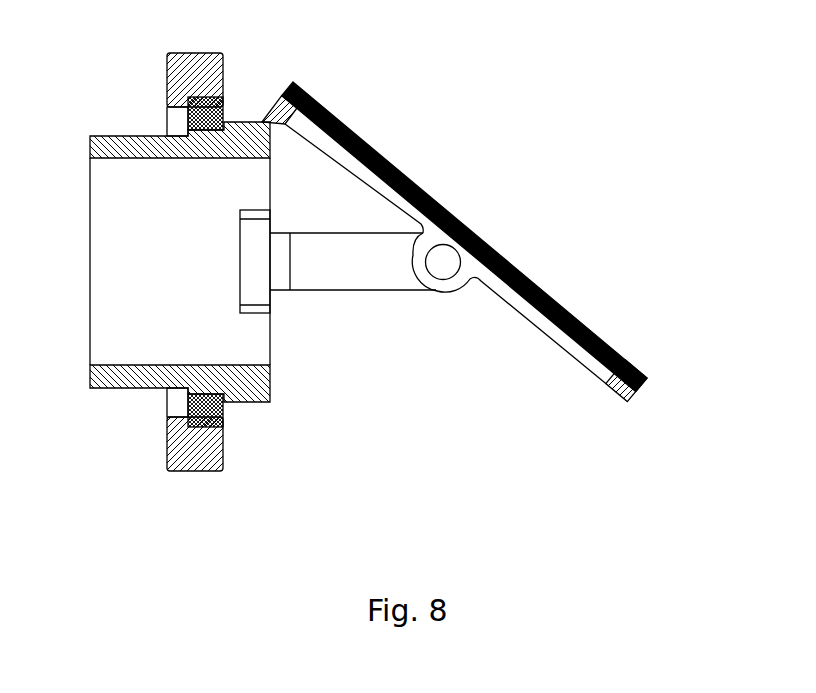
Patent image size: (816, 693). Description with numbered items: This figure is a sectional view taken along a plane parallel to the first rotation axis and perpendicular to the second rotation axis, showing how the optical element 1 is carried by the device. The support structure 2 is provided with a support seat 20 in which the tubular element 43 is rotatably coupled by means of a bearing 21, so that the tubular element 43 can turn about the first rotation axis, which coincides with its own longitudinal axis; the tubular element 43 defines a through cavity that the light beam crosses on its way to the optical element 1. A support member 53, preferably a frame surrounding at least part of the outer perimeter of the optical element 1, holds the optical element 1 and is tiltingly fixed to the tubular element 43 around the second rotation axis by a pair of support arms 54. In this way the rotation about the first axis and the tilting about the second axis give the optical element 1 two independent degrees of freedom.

The optical element 1 is at (509, 264).
The support structure 2 is at (167, 70).
The support seat 20 is at (178, 116).
The bearing 21 is at (223, 103).
The tubular element 43 is at (133, 388).
The support member 53 is at (637, 386).
The support arms 54 is at (368, 280).